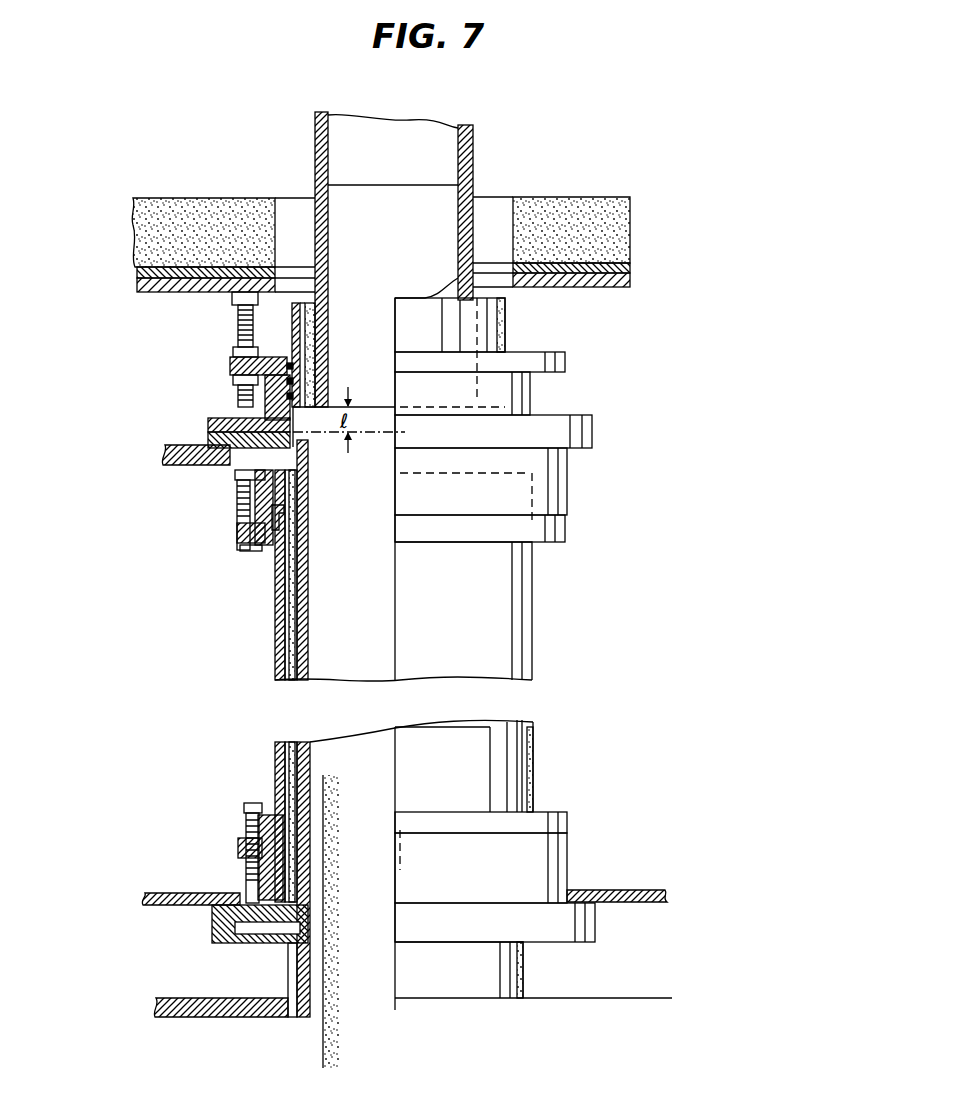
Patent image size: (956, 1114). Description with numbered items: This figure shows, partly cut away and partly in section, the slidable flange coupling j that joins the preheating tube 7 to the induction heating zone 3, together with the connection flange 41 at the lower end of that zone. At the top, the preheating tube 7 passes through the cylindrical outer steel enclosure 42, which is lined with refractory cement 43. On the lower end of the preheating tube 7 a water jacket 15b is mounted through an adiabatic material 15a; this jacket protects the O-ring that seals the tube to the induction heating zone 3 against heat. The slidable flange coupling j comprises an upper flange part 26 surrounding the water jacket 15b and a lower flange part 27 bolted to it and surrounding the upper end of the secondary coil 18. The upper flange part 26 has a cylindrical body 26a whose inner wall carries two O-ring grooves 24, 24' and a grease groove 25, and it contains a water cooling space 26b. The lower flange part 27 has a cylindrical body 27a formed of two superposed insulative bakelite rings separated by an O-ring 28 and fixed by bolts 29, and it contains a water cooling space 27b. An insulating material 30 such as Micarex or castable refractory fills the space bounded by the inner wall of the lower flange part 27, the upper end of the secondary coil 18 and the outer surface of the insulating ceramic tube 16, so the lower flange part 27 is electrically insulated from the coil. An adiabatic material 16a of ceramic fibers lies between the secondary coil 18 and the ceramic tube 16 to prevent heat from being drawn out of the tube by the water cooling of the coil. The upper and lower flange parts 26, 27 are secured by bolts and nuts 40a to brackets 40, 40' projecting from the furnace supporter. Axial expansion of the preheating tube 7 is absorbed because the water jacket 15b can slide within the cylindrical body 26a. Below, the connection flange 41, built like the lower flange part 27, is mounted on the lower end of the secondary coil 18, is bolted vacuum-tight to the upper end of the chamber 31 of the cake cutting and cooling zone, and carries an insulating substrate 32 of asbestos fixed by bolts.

The preheating tube 7 is at (318, 128).
The refractory cement 43 is at (176, 210).
The bolts and nuts 40a is at (225, 305).
The outer steel enclosure 42 is at (152, 270).
The bracket 40 is at (399, 286).
The water jacket 15b is at (293, 317).
The adiabatic material 15a is at (308, 356).
The upper flange part 26 is at (240, 350).
The O-ring groove 24 is at (228, 376).
The grease groove 25 is at (240, 387).
The cylindrical body 26a is at (262, 403).
The water cooling space 26b is at (208, 424).
The bracket 40' is at (169, 461).
The O-ring groove 24' is at (343, 441).
The insulating material 30 is at (290, 455).
The lower flange part 27 is at (250, 471).
The cylindrical body 27a is at (237, 500).
The water cooling space 27b is at (236, 476).
The O-ring 28 is at (269, 540).
The bolts 29 is at (247, 552).
The adiabatic material 16a is at (295, 532).
The secondary coil 18 is at (280, 572).
The insulating ceramic tube 16 is at (305, 640).
The induction heating zone 3 is at (592, 543).
The connection flange 41 is at (240, 857).
The insulating substrate 32 is at (168, 903).
The chamber 31 is at (190, 1003).
The slidable flange coupling j is at (128, 405).